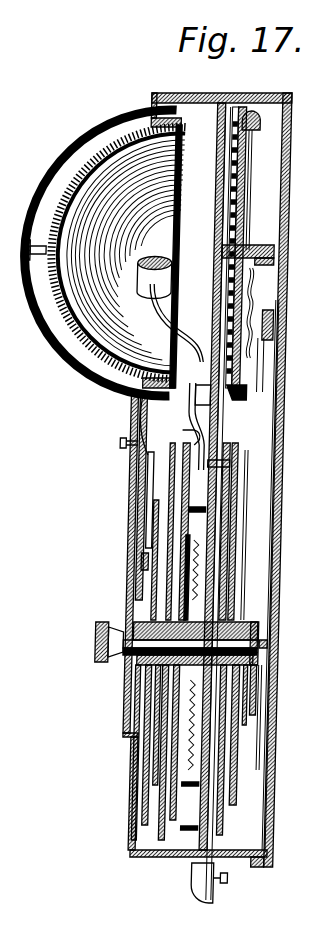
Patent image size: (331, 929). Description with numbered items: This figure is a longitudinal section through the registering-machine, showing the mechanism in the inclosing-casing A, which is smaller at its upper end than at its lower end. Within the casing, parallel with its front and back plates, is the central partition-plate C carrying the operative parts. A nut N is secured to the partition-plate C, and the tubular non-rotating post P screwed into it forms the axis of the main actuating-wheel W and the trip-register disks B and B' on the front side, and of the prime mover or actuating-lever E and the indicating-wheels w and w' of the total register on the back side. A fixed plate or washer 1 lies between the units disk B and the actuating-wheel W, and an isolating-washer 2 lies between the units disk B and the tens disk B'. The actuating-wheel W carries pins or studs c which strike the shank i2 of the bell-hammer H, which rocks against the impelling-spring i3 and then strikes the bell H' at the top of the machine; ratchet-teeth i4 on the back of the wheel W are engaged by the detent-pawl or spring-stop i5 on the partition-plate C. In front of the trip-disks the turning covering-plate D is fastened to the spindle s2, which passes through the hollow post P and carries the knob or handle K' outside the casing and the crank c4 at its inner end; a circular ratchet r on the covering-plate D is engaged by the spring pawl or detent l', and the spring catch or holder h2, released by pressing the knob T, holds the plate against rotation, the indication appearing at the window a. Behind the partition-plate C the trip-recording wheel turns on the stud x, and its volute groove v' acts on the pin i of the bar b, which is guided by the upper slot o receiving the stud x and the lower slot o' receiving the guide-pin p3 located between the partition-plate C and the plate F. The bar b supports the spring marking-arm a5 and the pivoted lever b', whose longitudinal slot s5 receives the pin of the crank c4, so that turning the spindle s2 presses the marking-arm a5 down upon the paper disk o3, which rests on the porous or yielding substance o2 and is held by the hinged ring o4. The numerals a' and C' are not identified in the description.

The inclosing-casing A is at (294, 332).
The bar b is at (222, 91).
The units disk of the trip-register B is at (185, 861).
The bell H' is at (102, 253).
The bell-hammer H is at (160, 310).
The central partition-plate C is at (206, 476).
The spiral or volute groove v' is at (207, 503).
The stud or pin i is at (234, 122).
The upper slot o is at (231, 247).
The lower slot o' is at (236, 407).
The hinged ring o4 is at (249, 122).
The paper disk o3 is at (245, 150).
The porous or yielding substance o2 is at (246, 160).
The stud x is at (248, 244).
The spring marking-arm a5 is at (247, 302).
The swinging arm or lever b' is at (263, 369).
The rod a' is at (265, 575).
The impelling-spring i3 is at (196, 419).
The shank of the bell-hammer i2 is at (183, 434).
The spring catch or holder h2 is at (151, 497).
The knob or button T is at (122, 445).
The plate F is at (239, 433).
The guide-pin p3 is at (239, 457).
The window a is at (133, 500).
The pins or studs c is at (192, 664).
The ratchet-teeth i4 is at (189, 648).
The turning covering-plate D is at (153, 560).
The isolating-washer 2 is at (154, 585).
The spring pawl or detent l' is at (151, 531).
The detent-pawl or spring-stop i5 is at (246, 597).
The tubular non-rotating post P is at (250, 535).
The knob or handle K' is at (98, 642).
The spindle or stem s2 is at (190, 643).
The longitudinal slot s5 is at (274, 630).
The nut N is at (148, 685).
The circular ratchet r is at (145, 703).
The fixed plate or washer 1 is at (184, 782).
The tens disk of the trip-register B' is at (136, 755).
The main actuating-wheel W is at (189, 845).
The bar C' is at (196, 772).
The indicating-wheel of the total register w is at (235, 757).
The indicating-wheel of the total register w' is at (248, 739).
The crank c4 is at (250, 717).
The prime mover or actuating-lever E is at (225, 890).